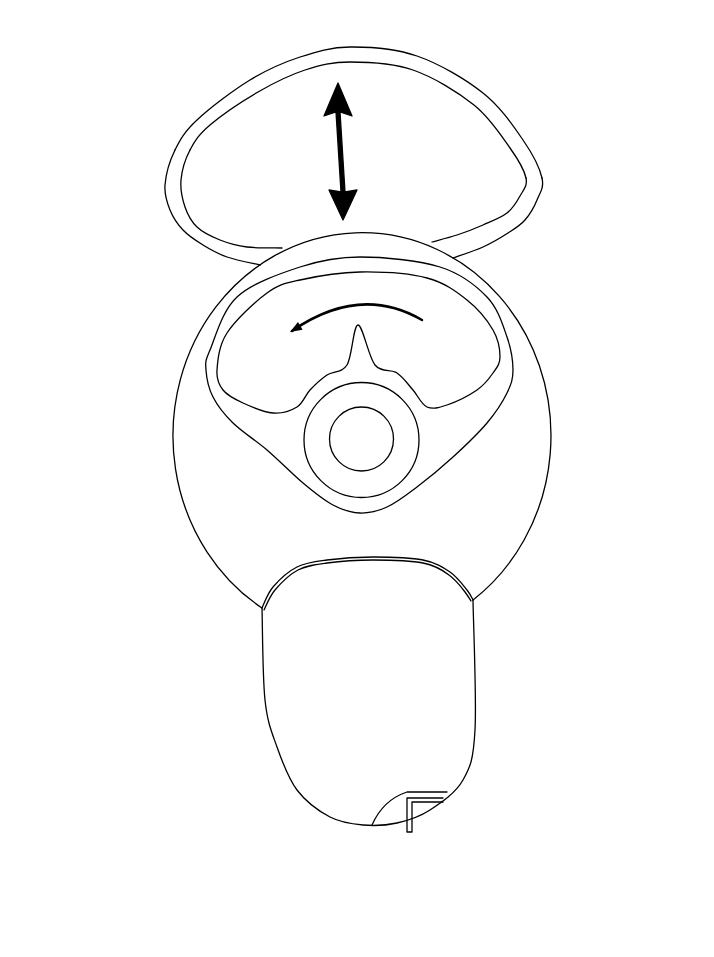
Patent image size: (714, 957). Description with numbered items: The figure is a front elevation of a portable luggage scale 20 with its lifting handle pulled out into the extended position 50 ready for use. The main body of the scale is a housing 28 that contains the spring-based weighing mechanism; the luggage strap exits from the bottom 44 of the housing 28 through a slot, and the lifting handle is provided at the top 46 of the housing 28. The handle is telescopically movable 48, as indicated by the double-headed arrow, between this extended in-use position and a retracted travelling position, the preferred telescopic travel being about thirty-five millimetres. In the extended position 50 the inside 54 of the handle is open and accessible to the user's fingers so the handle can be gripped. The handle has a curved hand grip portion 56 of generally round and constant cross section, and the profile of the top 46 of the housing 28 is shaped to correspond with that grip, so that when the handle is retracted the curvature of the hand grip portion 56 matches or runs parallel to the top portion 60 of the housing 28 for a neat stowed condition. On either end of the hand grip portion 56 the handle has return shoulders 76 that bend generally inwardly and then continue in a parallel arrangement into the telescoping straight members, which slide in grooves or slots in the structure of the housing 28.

The portable luggage scale 20 is at (208, 707).
The housing 28 is at (243, 533).
The bottom of the housing 44 is at (318, 810).
The top of the housing 46 is at (385, 237).
The telescopic movement 48 is at (336, 162).
The extended position 50 is at (151, 149).
The inside of the handle 54 is at (419, 118).
The curved hand grip portion 56 is at (262, 70).
The top portion of the housing 60 is at (218, 300).
The return shoulders 76 is at (170, 225).